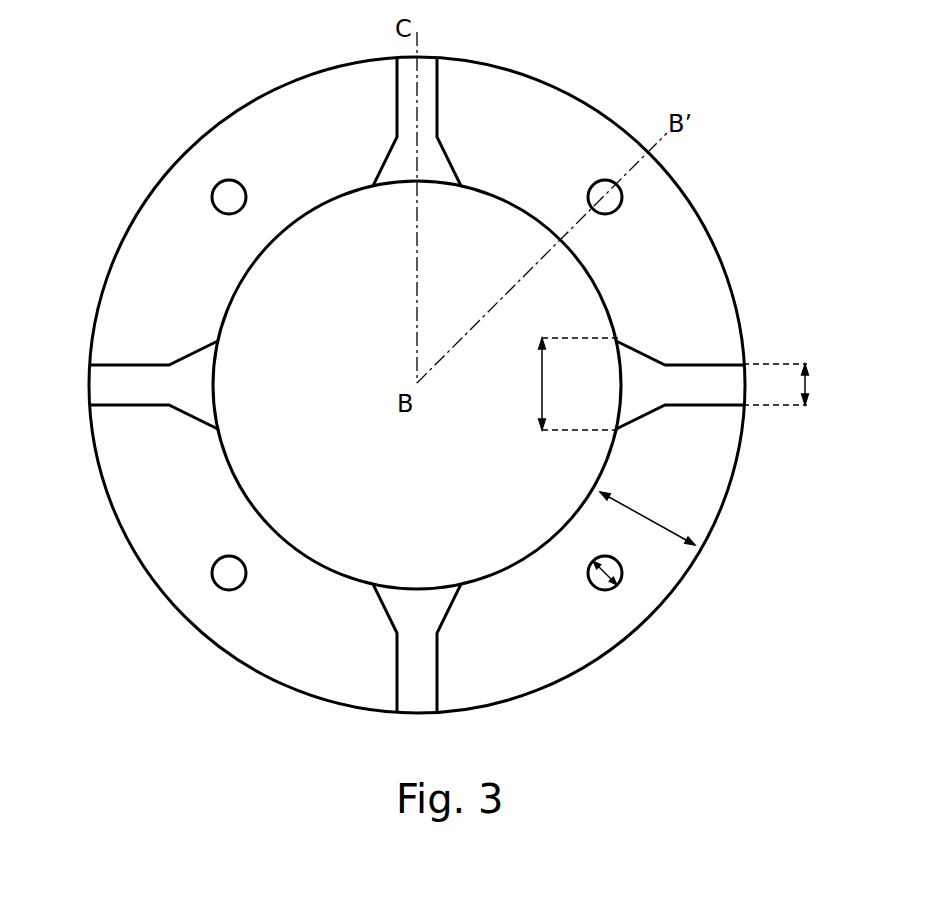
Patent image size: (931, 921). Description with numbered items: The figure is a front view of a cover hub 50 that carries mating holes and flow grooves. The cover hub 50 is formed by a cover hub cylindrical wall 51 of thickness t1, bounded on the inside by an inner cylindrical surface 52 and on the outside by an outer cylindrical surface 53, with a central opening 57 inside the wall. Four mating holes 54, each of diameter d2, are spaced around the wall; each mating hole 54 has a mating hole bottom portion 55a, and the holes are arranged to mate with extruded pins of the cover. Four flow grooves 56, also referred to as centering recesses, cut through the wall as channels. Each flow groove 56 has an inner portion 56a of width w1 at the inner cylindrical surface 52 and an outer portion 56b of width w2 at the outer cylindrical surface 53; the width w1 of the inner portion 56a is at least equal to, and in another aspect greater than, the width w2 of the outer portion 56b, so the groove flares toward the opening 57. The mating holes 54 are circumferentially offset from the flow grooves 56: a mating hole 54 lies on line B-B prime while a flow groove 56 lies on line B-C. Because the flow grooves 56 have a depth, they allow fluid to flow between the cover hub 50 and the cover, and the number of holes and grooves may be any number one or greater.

The cover hub 50 is at (720, 205).
The cover hub cylindrical wall 51 is at (657, 542).
The inner cylindrical surface 52 is at (272, 238).
The outer cylindrical surface 53 is at (743, 423).
The mating hole 54 is at (593, 183).
The mating hole bottom portion 55a is at (221, 182).
The flow groove 56 is at (396, 125).
The flow groove inner portion 56a is at (642, 348).
The flow groove outer portion 56b is at (730, 365).
The opening 57 is at (237, 303).
The width of flow groove inner portion w1 is at (561, 384).
The width of flow groove outer portion w2 is at (795, 384).
The thickness of cover hub cylindrical wall t1 is at (683, 532).
The diameter of mating hole d2 is at (600, 587).